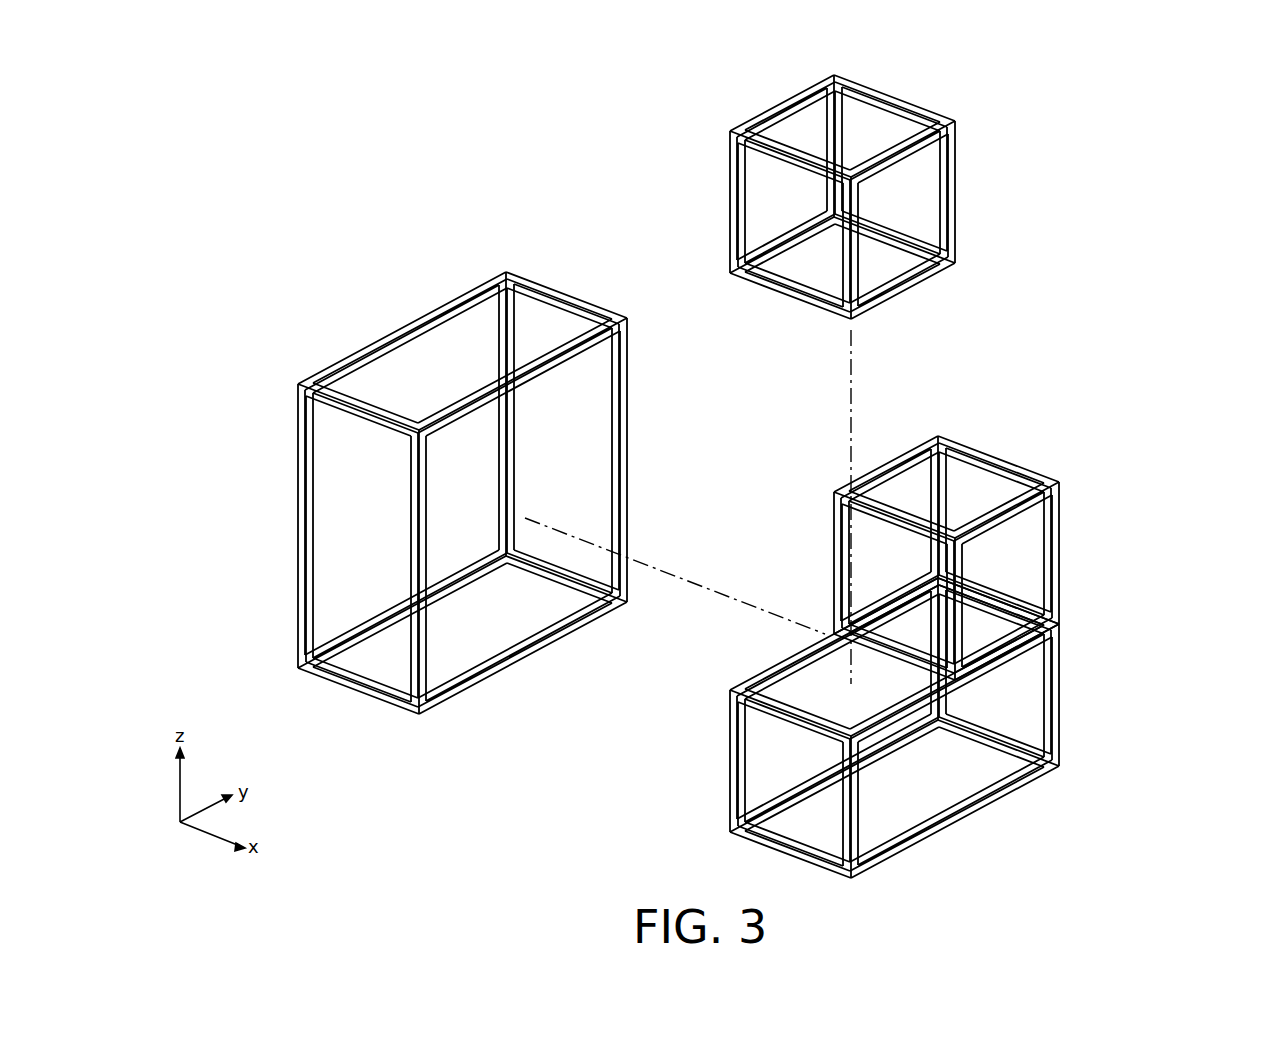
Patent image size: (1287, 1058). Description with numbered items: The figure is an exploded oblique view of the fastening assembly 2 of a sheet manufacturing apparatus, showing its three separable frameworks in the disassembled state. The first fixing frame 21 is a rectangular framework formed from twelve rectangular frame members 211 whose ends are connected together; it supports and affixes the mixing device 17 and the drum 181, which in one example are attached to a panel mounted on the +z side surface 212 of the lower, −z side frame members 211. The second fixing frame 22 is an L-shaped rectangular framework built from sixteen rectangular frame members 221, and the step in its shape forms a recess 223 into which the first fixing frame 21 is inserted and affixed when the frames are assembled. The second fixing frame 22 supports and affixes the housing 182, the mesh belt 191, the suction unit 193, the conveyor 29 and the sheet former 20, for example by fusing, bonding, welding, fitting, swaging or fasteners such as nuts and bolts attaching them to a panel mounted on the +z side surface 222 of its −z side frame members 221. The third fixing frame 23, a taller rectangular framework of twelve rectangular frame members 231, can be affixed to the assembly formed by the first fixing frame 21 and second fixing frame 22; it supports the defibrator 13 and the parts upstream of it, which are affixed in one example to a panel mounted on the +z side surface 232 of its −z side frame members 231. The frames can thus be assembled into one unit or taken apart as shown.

The fastening assembly 2 is at (1166, 152).
The defibrator 13 is at (454, 357).
The mixing device 17 is at (815, 135).
The drum 181 is at (872, 138).
The housing 182 is at (1023, 567).
The mesh belt 191 is at (1023, 625).
The suction unit 193 is at (1023, 665).
The sheet former 20 is at (883, 800).
The conveyor 29 is at (937, 787).
The first fixing frame 21 is at (787, 98).
The rectangular frame members 211 is at (953, 182).
The +z side surface 212 is at (785, 280).
The second fixing frame 22 is at (995, 460).
The rectangular frame members 221 is at (998, 790).
The +z side surface 222 is at (787, 840).
The recess 223 is at (782, 658).
The third fixing frame 23 is at (415, 318).
The rectangular frame members 231 is at (360, 412).
The +z side surface 232 is at (355, 672).